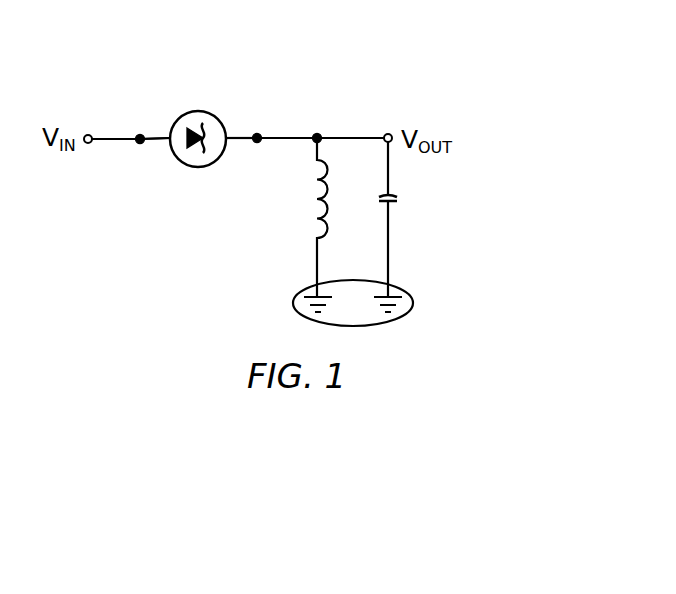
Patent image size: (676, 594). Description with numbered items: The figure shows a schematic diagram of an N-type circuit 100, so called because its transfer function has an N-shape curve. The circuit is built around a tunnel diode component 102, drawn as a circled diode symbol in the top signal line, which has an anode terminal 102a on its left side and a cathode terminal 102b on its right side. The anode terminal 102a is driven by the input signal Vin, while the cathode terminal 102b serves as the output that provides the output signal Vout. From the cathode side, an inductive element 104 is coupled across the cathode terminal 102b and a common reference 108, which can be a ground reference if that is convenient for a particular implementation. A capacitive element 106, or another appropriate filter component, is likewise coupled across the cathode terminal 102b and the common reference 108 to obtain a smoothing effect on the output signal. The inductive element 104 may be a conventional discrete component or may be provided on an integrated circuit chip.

The N-type circuit 100 is at (527, 158).
The tunnel diode component 102 is at (197, 111).
The anode terminal 102a is at (160, 136).
The cathode terminal 102b is at (240, 136).
The inductive element 104 is at (318, 207).
The capacitive element 106 is at (398, 200).
The common reference 108 is at (413, 300).